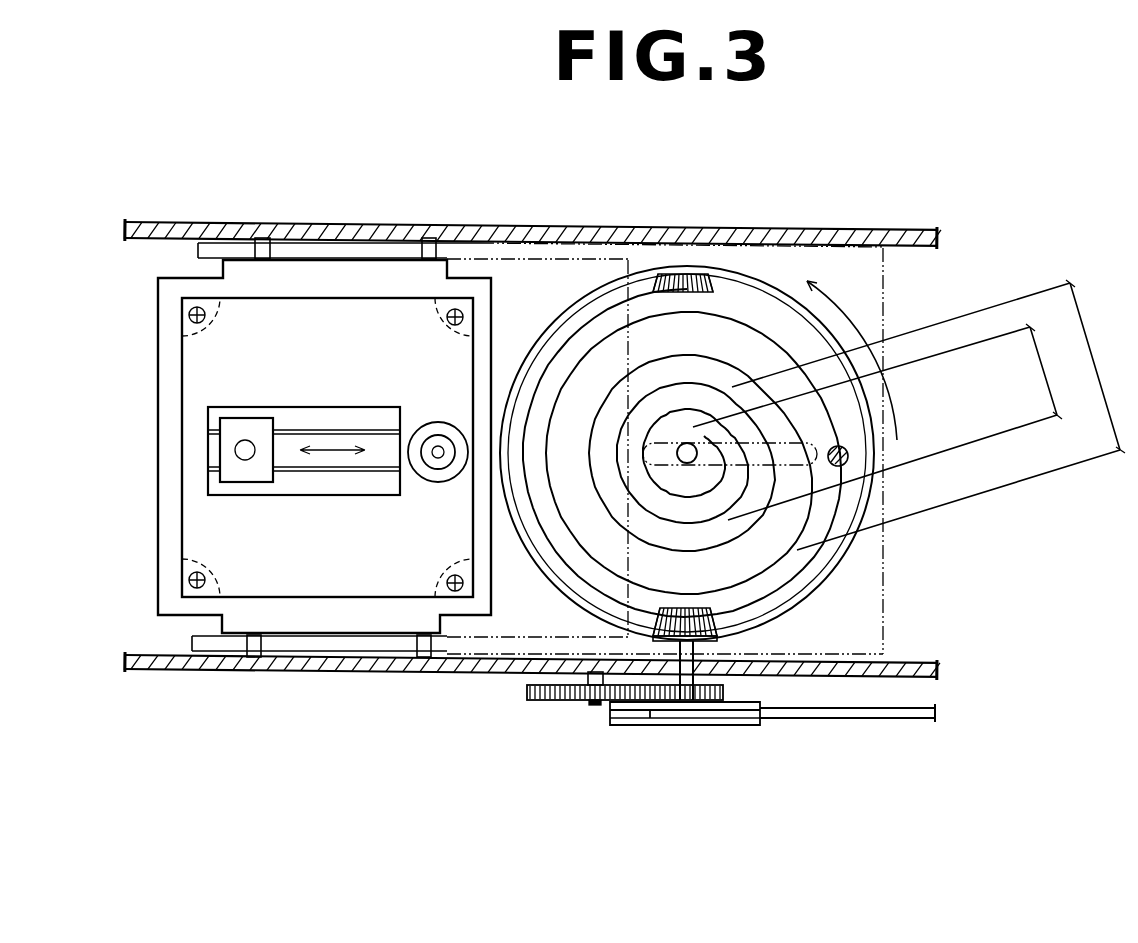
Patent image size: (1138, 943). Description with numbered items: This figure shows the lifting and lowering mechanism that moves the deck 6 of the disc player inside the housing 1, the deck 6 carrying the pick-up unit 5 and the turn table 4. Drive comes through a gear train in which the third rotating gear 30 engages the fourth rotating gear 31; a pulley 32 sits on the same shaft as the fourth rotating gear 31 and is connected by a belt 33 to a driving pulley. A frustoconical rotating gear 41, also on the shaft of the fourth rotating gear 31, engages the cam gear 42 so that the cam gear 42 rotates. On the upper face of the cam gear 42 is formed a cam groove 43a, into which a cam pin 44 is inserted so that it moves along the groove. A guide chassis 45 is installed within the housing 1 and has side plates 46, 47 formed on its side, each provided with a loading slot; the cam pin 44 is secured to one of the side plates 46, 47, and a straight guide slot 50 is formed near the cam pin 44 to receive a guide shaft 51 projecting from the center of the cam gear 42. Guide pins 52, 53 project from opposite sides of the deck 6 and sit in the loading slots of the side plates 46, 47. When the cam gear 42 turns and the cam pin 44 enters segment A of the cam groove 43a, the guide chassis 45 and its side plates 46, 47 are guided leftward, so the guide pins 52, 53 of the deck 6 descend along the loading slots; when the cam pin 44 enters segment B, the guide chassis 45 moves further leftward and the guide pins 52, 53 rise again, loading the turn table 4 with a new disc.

The housing 1 is at (590, 224).
The turn table 4 is at (440, 420).
The pick-up unit 5 is at (245, 455).
The deck 6 is at (192, 452).
The third rotating gear 30 is at (540, 700).
The fourth rotating gear 31 is at (676, 702).
The pulley 32 is at (693, 725).
The belt 33 is at (856, 715).
The rotating gear 41 is at (720, 630).
The cam gear 42 is at (800, 587).
The cam groove 43a is at (752, 312).
The cam pin 44 is at (840, 462).
The guide chassis 45 is at (887, 293).
The side plate 46 is at (358, 243).
The side plate 47 is at (355, 653).
The straight guide slot 50 is at (767, 443).
The guide shaft 51 is at (687, 443).
The guide pin 52 is at (266, 238).
The guide pin 53 is at (431, 238).